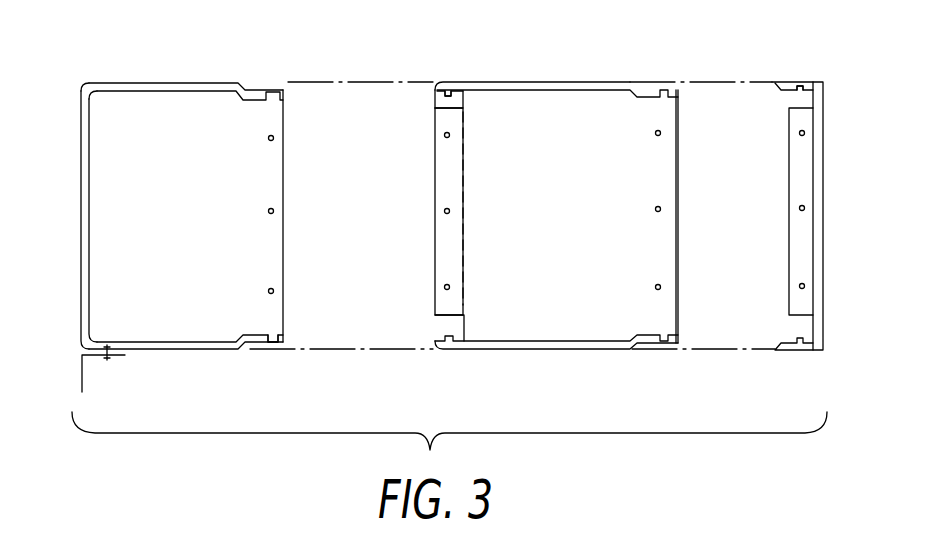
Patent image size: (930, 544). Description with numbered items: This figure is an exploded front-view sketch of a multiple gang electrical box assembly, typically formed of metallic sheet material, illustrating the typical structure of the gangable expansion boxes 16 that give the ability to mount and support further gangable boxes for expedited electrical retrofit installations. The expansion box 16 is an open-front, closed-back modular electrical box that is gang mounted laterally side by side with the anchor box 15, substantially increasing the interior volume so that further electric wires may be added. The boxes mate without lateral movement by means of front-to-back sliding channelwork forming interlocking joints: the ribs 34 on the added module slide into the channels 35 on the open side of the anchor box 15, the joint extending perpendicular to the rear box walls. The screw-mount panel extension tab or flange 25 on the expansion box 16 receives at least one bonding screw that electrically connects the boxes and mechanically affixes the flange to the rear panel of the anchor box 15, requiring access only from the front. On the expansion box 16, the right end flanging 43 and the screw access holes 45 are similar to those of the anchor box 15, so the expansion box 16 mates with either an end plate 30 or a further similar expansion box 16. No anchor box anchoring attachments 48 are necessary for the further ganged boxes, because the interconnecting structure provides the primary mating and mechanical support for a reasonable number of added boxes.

The anchor box 15 is at (80, 240).
The expansion box 16 is at (550, 82).
The screw-mount panel extension tab or flange 25 is at (440, 193).
The sidewall end plate 30 is at (824, 100).
The ribs 34 is at (448, 93).
The channels 35 is at (273, 343).
The right end flanging 43 is at (678, 86).
The screw access holes 45 is at (267, 214).
The anchor box anchoring attachments 48 is at (82, 382).